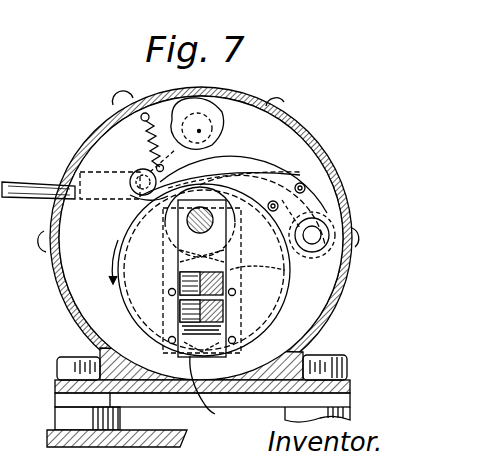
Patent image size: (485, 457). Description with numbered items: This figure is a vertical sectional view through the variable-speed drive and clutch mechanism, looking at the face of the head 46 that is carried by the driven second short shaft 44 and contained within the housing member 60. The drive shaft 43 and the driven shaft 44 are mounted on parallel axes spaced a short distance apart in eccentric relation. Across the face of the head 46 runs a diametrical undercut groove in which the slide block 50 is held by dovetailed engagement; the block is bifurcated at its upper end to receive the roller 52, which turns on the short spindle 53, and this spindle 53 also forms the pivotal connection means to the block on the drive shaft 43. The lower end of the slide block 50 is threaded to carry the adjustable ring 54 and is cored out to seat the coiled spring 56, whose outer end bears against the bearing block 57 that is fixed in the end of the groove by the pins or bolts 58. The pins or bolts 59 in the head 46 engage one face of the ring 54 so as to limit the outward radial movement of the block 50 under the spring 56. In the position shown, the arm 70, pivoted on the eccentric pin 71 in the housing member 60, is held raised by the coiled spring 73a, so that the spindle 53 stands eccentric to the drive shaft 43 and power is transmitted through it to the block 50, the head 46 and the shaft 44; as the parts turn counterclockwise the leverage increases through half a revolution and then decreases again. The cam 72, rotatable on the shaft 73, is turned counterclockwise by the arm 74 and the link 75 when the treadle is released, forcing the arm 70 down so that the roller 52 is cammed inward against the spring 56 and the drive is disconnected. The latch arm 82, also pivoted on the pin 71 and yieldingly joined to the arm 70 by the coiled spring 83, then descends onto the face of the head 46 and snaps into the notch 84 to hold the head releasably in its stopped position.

The short shaft 43 is at (143, 272).
The second short shaft 44 is at (257, 276).
The head 46 is at (240, 312).
The slide block 50 is at (204, 270).
The roller 52 is at (160, 183).
The short spindle 53 is at (190, 224).
The ring 54 is at (240, 330).
The coiled spring 56 is at (200, 318).
The bearing block 57 is at (211, 392).
The pins or bolts 58 is at (170, 343).
The pins or bolts 59 is at (171, 292).
The housing member 60 is at (62, 262).
The arm 70 is at (262, 181).
The eccentric pin 71 is at (330, 222).
The cam 72 is at (187, 108).
The shaft 73 is at (238, 98).
The coiled spring 73a is at (145, 131).
The arm 74 is at (140, 116).
The link 75 is at (45, 184).
The latch arm 82 is at (290, 175).
The coiled spring 83 is at (288, 252).
The notch 84 is at (243, 190).